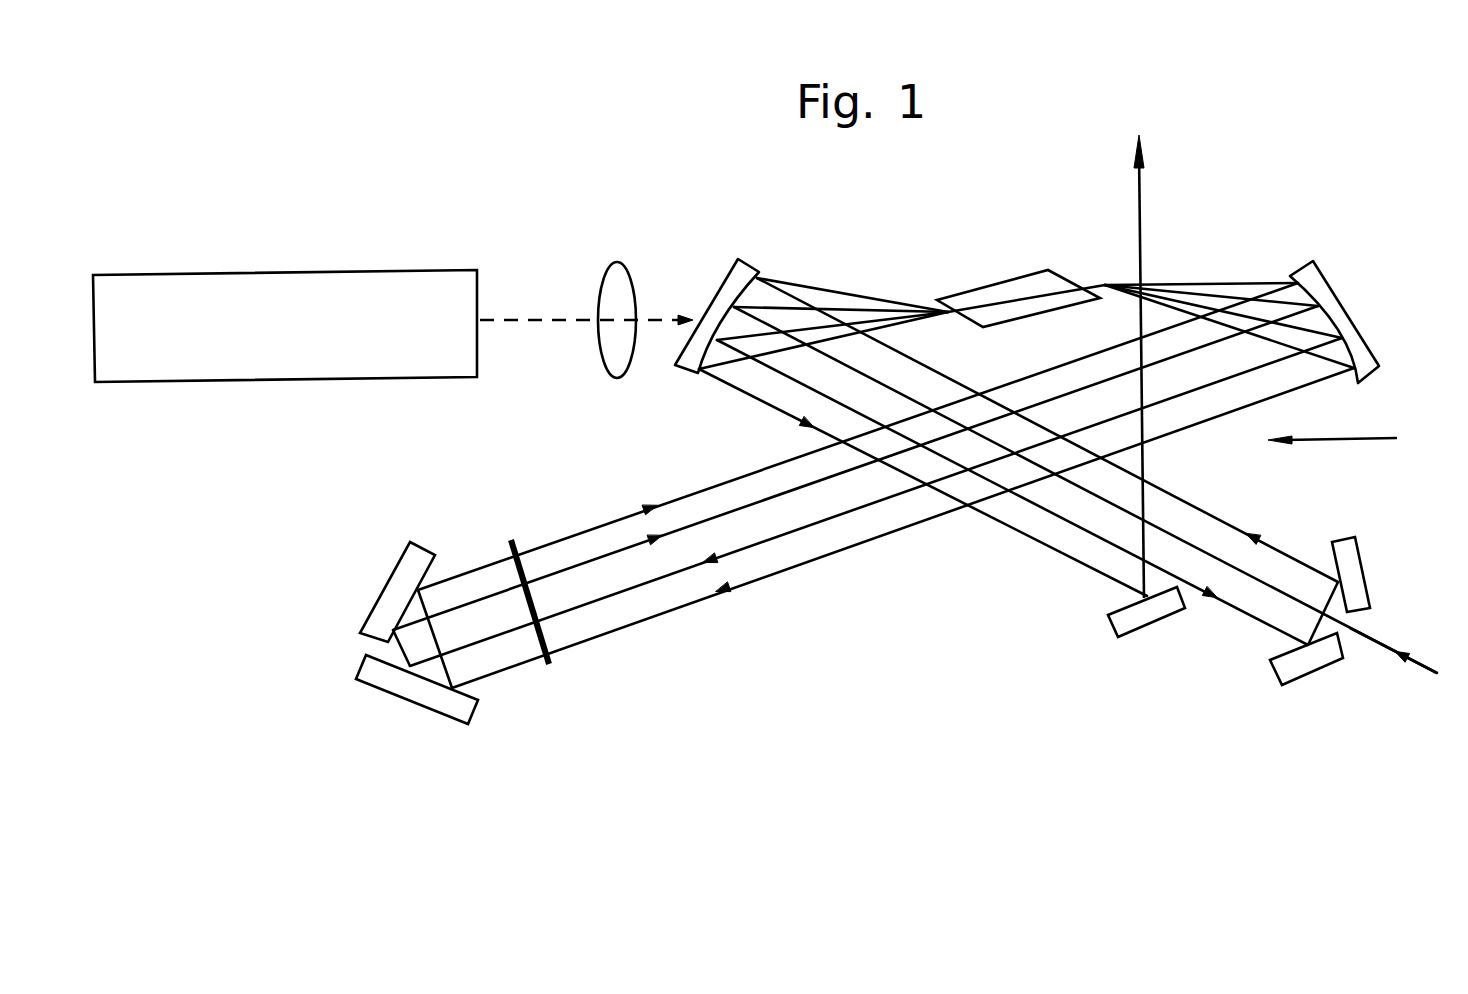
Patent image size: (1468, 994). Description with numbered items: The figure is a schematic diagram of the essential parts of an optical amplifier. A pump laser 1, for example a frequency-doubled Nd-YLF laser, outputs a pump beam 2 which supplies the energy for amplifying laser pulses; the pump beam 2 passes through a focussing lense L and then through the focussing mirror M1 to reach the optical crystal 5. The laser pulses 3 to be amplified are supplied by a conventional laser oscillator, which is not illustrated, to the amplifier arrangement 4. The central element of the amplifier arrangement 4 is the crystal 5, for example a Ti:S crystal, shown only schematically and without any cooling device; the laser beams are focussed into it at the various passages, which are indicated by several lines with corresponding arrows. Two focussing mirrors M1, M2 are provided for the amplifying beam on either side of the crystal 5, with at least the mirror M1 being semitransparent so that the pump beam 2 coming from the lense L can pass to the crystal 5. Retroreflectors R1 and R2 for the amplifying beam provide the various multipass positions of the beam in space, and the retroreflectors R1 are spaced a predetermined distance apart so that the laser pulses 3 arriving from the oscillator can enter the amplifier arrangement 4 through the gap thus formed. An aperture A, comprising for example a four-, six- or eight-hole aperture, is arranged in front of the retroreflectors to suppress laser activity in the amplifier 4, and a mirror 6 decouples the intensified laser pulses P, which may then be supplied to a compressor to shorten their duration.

The pump laser 1 is at (313, 348).
The pump beam 2 is at (557, 320).
The focussing lense L is at (617, 273).
The focussing mirror M1 is at (733, 282).
The optical crystal 5 is at (1010, 292).
The intensified laser pulses P is at (1140, 212).
The focussing mirror M2 is at (1317, 282).
The amplifier arrangement 4 is at (1348, 441).
The retroreflectors R1 is at (1368, 611).
The retroreflectors R2 is at (372, 633).
The aperture A is at (550, 664).
The mirror 6 is at (1133, 620).
The laser pulses 3 is at (1390, 680).